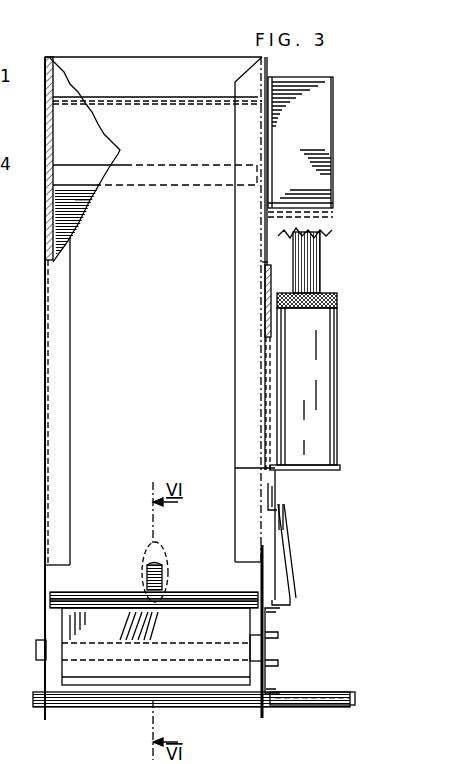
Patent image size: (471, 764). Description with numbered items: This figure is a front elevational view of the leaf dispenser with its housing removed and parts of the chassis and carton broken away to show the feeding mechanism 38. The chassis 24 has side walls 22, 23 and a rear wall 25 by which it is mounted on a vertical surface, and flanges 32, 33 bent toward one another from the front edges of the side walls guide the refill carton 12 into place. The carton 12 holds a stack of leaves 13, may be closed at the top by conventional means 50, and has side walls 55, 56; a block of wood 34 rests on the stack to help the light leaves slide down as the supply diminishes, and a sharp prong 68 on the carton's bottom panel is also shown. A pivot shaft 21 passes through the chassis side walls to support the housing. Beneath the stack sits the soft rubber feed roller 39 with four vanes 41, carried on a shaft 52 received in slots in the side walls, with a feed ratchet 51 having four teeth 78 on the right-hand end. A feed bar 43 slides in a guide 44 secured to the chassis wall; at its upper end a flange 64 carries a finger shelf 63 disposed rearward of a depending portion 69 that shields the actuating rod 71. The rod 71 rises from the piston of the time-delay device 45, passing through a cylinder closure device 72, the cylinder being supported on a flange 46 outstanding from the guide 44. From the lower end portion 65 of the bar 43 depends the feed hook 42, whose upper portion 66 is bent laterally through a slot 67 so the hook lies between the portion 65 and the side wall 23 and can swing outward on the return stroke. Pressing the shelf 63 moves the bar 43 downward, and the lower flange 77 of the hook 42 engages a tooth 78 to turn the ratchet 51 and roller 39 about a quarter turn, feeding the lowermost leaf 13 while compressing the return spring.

The refill carton 12 is at (110, 92).
The leaves 13 is at (92, 203).
The pivot shaft 21 is at (340, 692).
The chassis side wall 22 is at (45, 403).
The chassis side wall 23 is at (278, 236).
The chassis 24 is at (63, 57).
The rear wall 25 is at (225, 72).
The flange 32 is at (73, 283).
The flange 33 is at (238, 222).
The block of wood 34 is at (113, 160).
The feeding mechanism 38 is at (316, 205).
The feed roller 39 is at (162, 646).
The vanes 41 is at (120, 688).
The feed hook 42 is at (293, 560).
The feed bar 43 is at (262, 265).
The guide 44 is at (264, 340).
The time-delay device 45 is at (338, 367).
The flange 46 is at (332, 470).
The closure means 50 is at (132, 97).
The feed ratchet 51 is at (272, 678).
The carrying shaft 52 is at (38, 650).
The carton side wall 55 is at (60, 590).
The carton side wall 56 is at (212, 592).
The shelf 63 is at (290, 205).
The flange 64 is at (333, 218).
The lower end portion 65 is at (280, 494).
The upper portion 66 is at (270, 490).
The slot 67 is at (286, 509).
The prong 68 is at (144, 560).
The depending portion 69 is at (320, 234).
The actuating rod 71 is at (322, 270).
The cylinder closure device 72 is at (338, 298).
The lower flange 77 is at (285, 602).
The teeth 78 is at (272, 664).